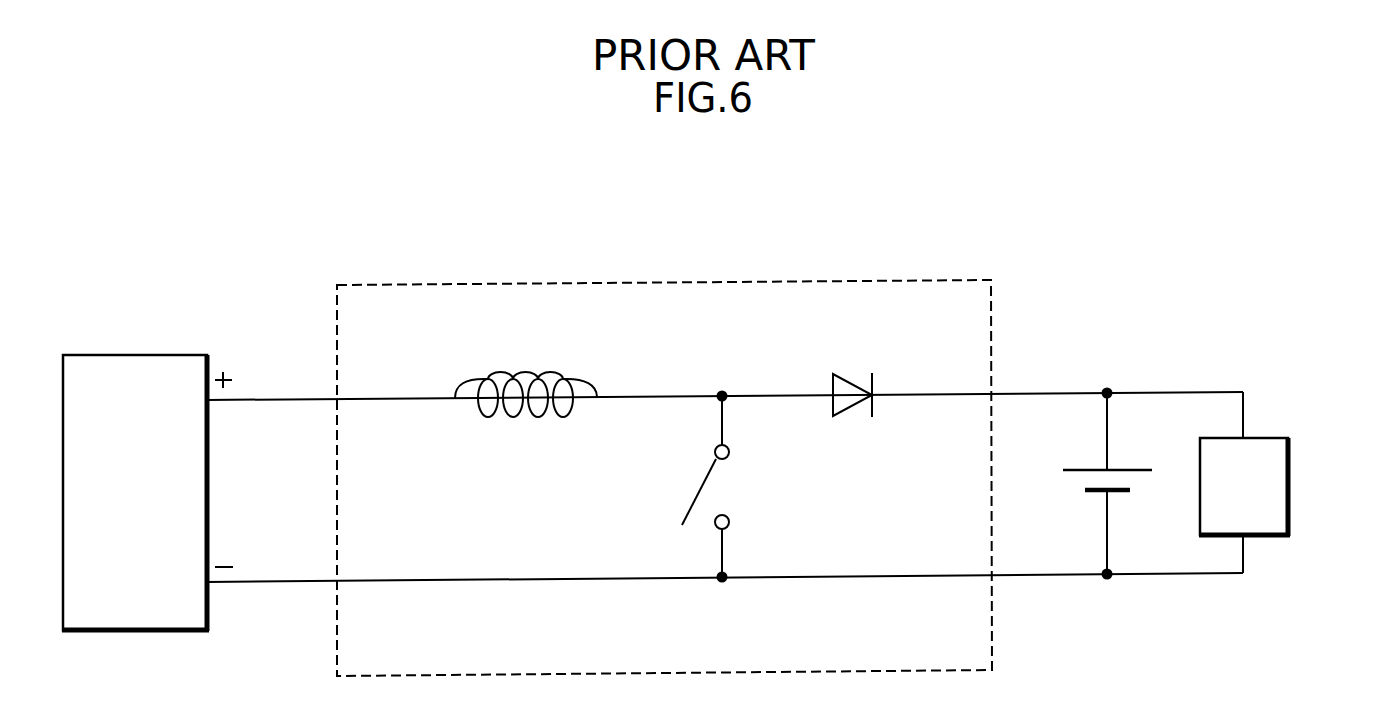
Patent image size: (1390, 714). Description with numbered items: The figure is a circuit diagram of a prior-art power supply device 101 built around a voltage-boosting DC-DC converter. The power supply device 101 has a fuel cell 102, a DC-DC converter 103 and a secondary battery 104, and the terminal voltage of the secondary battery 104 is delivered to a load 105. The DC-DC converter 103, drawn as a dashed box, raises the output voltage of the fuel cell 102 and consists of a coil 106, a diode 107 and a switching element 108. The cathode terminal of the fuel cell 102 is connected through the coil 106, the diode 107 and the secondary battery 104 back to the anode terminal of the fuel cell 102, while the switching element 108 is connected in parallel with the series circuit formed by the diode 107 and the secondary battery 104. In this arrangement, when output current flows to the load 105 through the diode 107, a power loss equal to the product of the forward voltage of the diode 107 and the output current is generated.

The power supply device 101 is at (199, 181).
The fuel cell 102 is at (158, 354).
The DC-DC converter 103 is at (853, 280).
The secondary battery 104 is at (1128, 468).
The load 105 is at (1292, 458).
The coil 106 is at (550, 378).
The diode 107 is at (848, 374).
The switching element 108 is at (703, 492).